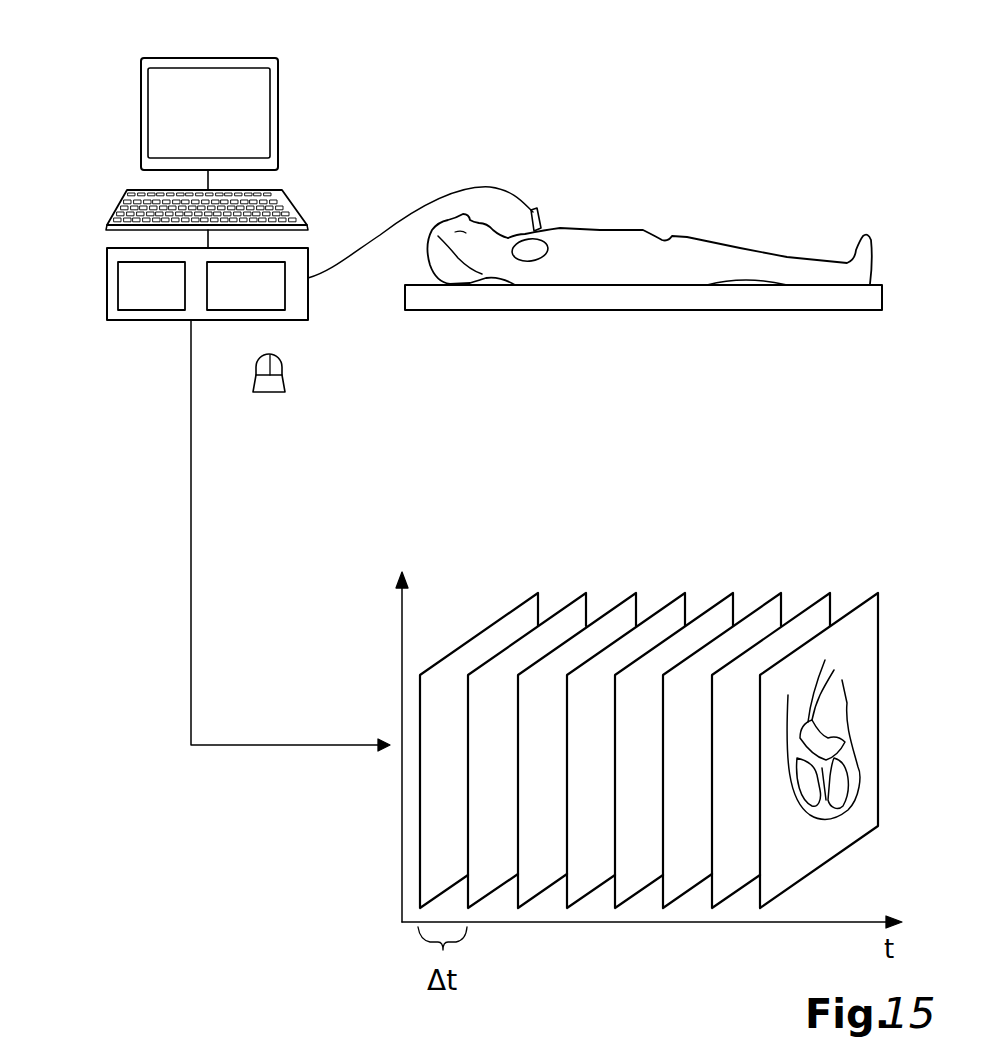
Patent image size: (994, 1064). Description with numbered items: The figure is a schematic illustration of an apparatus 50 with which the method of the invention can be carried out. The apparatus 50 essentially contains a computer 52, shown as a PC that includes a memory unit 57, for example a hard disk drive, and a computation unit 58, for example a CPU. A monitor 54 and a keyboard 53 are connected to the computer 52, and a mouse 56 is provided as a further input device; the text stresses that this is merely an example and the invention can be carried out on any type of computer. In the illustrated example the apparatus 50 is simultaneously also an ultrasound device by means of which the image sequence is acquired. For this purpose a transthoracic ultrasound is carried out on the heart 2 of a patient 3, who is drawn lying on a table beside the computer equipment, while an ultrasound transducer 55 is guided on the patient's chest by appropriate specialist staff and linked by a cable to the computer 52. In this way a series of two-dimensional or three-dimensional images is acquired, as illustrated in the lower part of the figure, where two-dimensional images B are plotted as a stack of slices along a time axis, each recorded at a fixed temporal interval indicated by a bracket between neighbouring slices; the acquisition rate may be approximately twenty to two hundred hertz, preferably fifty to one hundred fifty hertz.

The apparatus 50 is at (523, 103).
The monitor 54 is at (141, 100).
The keyboard 53 is at (115, 210).
The computer 52 is at (161, 284).
The memory unit 57 is at (170, 303).
The computation unit 58 is at (260, 303).
The mouse 56 is at (268, 398).
The sensor / ultrasound probe 55 is at (541, 212).
The patient 3 is at (765, 250).
The heart 2 is at (547, 260).
The 2D images B is at (477, 635).